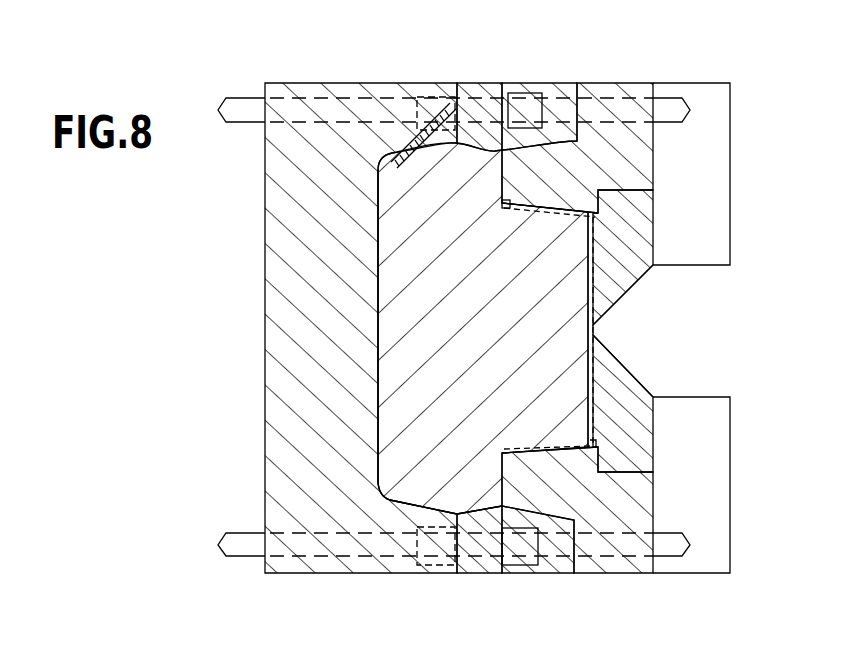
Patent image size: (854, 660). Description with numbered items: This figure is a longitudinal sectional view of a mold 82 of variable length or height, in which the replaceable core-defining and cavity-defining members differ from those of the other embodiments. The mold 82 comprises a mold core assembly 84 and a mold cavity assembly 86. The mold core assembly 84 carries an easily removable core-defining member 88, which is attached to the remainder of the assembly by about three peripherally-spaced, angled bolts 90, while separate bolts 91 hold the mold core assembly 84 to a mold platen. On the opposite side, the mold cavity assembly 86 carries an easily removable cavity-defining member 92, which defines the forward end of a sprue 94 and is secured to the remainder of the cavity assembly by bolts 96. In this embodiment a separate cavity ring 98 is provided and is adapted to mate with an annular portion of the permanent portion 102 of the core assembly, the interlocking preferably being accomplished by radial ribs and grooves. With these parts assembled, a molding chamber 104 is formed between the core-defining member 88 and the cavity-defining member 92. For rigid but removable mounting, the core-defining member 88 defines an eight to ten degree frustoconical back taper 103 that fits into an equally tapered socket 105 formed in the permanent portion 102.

The mold 82 is at (419, 83).
The mold core assembly 84 is at (264, 252).
The mold cavity assembly 86 is at (668, 86).
The core-defining member 88 is at (495, 297).
The angled bolts 90 is at (415, 170).
The bolts 91 is at (342, 98).
The cavity-defining member 92 is at (643, 222).
The sprue 94 is at (717, 342).
The bolts 96 is at (594, 107).
The cavity ring 98 is at (544, 83).
The permanent portion 102 is at (360, 510).
The frustoconical back taper 103 is at (408, 500).
The molding chamber 104 is at (590, 390).
The tapered socket 105 is at (378, 388).